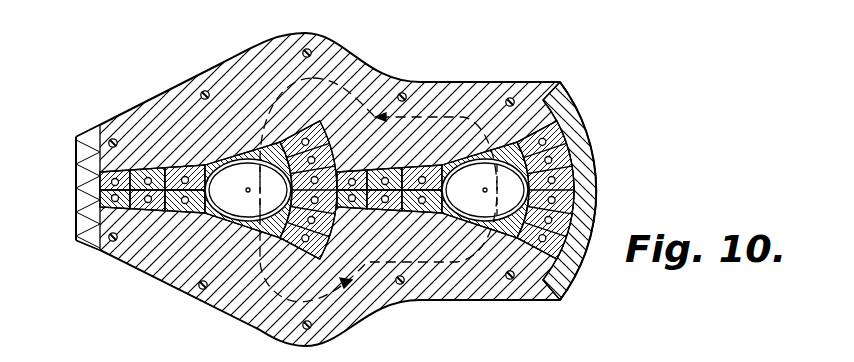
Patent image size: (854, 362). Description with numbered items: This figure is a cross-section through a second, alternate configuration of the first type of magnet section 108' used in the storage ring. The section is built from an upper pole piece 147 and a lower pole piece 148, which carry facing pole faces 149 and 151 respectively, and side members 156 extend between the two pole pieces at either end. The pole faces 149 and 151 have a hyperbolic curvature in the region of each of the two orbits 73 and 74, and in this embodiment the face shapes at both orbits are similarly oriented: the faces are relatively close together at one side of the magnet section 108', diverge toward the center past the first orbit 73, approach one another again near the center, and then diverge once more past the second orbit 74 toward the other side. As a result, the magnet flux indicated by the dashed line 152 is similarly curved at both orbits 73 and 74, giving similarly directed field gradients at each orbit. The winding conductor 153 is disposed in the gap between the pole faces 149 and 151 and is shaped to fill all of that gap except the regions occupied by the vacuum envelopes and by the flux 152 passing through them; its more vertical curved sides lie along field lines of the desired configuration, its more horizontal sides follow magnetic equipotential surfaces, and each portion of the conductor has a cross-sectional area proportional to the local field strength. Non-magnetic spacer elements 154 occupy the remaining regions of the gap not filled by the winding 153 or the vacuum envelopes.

The first magnet section type 108' is at (339, 189).
The upper pole piece 147 is at (378, 62).
The lower pole piece 148 is at (380, 318).
The pole face 149 is at (187, 166).
The pole face 151 is at (180, 210).
The magnetic flux 152 is at (262, 278).
The winding conductor 153 is at (333, 150).
The non-magnetic spacer elements 154 is at (255, 236).
The side members 156 is at (593, 160).
The orbit 73 is at (245, 190).
The orbit 74 is at (482, 190).